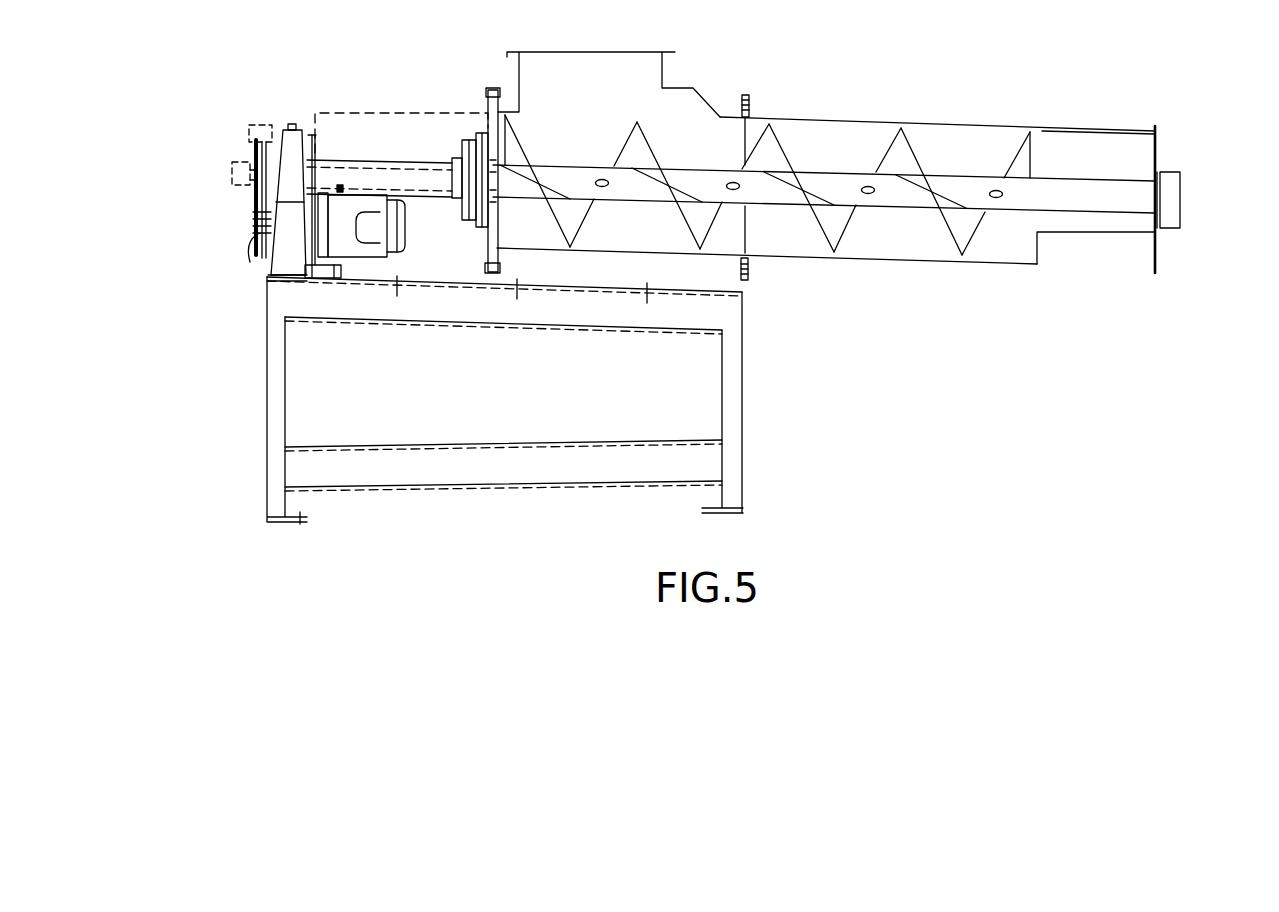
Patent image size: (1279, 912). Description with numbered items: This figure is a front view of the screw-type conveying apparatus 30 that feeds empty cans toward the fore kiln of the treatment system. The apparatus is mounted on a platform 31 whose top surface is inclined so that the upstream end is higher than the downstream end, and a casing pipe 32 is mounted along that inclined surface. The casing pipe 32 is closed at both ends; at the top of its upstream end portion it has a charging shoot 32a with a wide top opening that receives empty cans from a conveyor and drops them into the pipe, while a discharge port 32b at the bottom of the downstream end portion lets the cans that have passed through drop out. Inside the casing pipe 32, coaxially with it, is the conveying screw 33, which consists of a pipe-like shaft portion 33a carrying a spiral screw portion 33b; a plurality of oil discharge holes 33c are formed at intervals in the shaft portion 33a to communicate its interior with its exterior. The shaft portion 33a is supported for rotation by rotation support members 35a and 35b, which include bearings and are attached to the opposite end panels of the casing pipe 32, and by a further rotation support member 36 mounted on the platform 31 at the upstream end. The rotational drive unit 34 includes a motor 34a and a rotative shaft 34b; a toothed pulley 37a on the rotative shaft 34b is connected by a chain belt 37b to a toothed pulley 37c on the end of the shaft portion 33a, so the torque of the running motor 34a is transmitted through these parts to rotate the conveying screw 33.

The screw-type conveying apparatus 30 is at (779, 157).
The platform 31 is at (505, 489).
The casing pipe 32 is at (858, 118).
The charging shoot 32a is at (597, 52).
The discharge port 32b is at (1093, 234).
The conveying screw 33 is at (872, 186).
The shaft portion 33a is at (388, 160).
The screw portion 33b is at (656, 150).
The oil discharge holes 33c is at (868, 196).
The rotational drive unit 34 is at (320, 201).
The motor 34a is at (406, 247).
The rotative shaft 34b is at (258, 263).
The rotation support member 35a is at (470, 131).
The rotation support member 35b is at (1170, 172).
The rotation support member 36 is at (291, 126).
The toothed pulley 37a is at (250, 230).
The chain belt 37b is at (248, 193).
The toothed pulley 37c is at (257, 147).